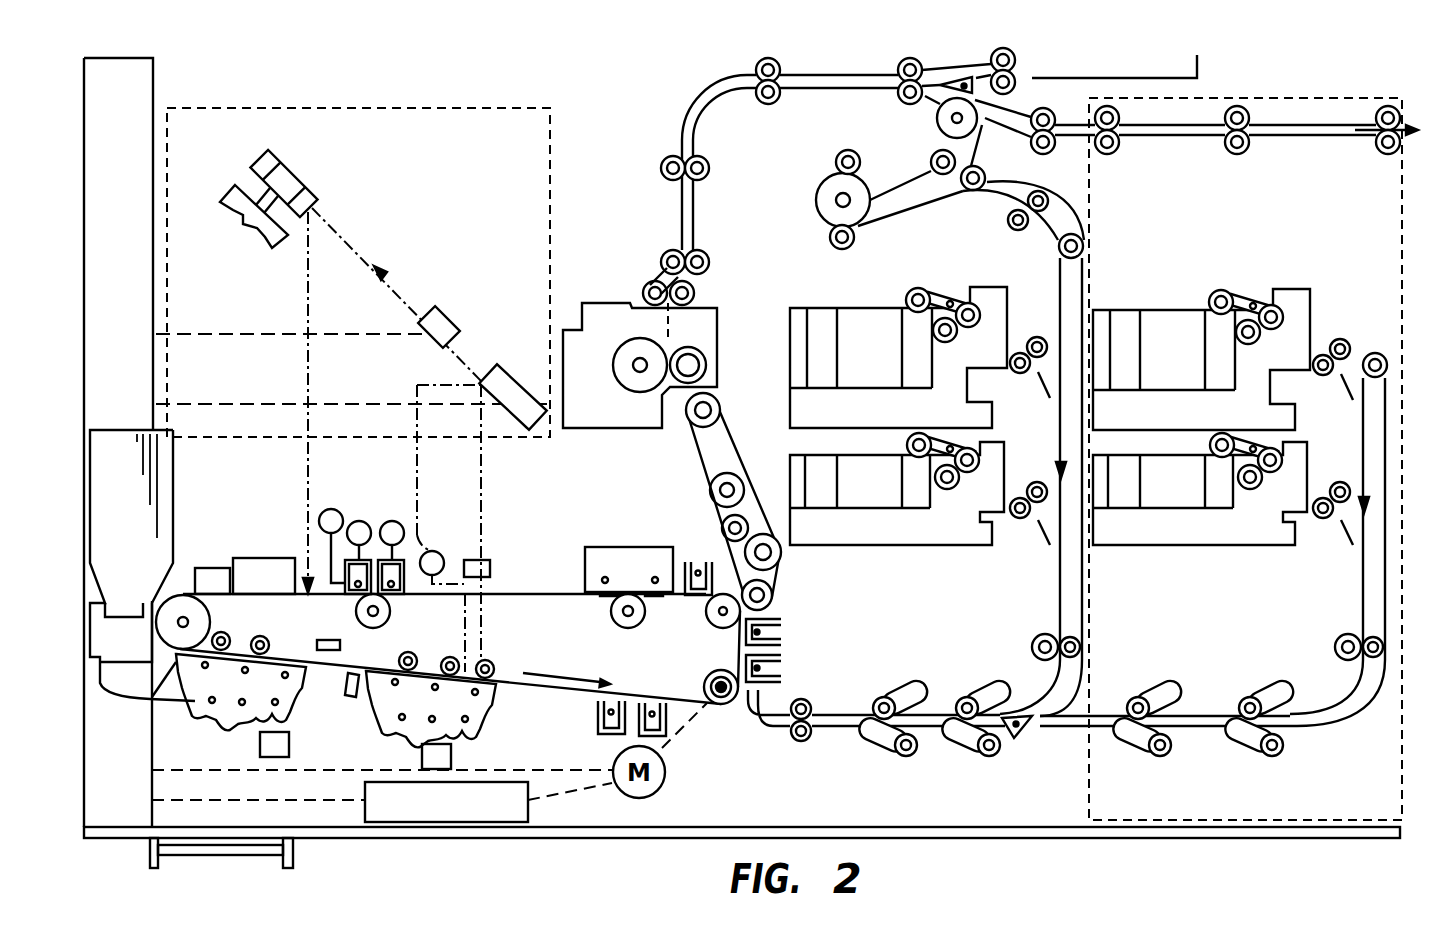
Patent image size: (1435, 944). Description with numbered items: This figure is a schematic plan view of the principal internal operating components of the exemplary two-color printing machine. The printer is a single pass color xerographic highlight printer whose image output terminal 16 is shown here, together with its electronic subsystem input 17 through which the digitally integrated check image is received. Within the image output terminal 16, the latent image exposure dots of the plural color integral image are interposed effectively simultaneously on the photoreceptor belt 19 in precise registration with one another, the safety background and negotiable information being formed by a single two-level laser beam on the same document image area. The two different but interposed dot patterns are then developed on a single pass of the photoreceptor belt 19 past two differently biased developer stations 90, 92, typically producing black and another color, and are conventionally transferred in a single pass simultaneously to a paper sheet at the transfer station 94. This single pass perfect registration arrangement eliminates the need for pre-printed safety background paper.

The image output terminal 16 is at (651, 76).
The electronic subsystem input 17 is at (147, 93).
The photoreceptor belt 19 is at (509, 594).
The developer station 90 is at (292, 698).
The developer station 92 is at (478, 704).
The transfer station 94 is at (787, 670).